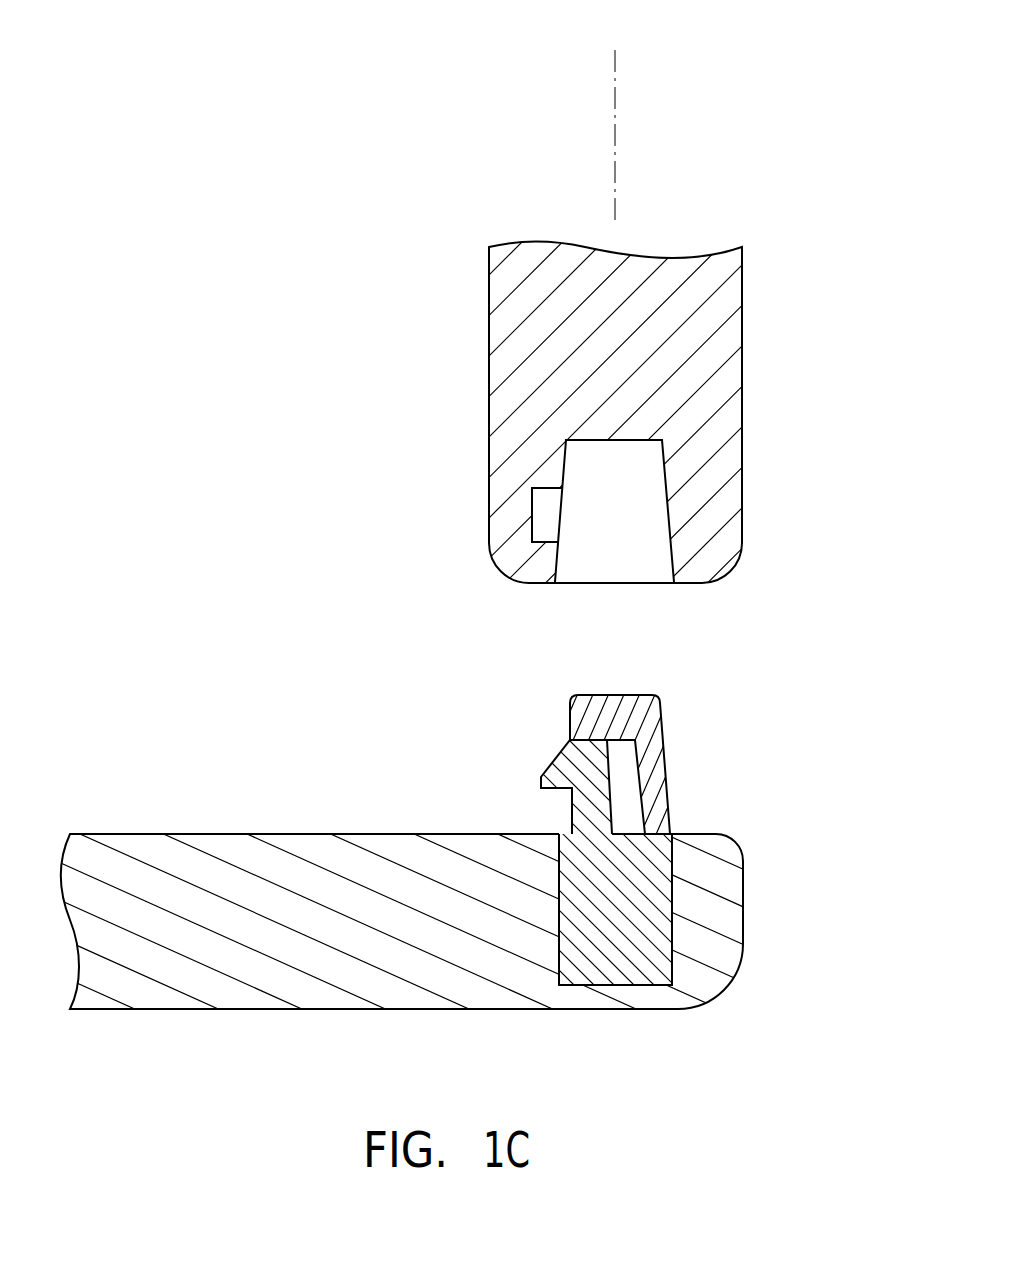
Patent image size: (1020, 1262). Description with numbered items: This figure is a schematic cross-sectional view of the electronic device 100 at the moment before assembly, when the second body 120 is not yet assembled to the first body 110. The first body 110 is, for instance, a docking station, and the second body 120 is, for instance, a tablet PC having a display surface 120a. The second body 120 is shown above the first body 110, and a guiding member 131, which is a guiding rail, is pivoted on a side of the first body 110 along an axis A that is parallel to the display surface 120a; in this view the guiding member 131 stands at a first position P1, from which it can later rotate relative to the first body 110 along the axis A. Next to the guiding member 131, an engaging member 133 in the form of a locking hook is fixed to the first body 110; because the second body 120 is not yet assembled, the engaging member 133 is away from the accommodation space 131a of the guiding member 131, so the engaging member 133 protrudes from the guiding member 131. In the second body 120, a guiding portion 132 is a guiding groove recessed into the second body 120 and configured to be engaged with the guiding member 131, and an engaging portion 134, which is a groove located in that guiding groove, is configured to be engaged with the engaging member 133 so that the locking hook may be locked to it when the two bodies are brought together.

The electronic device 100 is at (837, 1079).
The first body 110 is at (733, 910).
The second body 120 is at (728, 377).
The display surface 120a is at (490, 342).
The guiding member 131 is at (645, 708).
The accommodation space 131a is at (631, 792).
The guiding portion 132 is at (654, 514).
The engaging member 133 is at (587, 810).
The engaging portion 134 is at (538, 503).
The first position P1 is at (613, 696).
The axis A is at (614, 116).